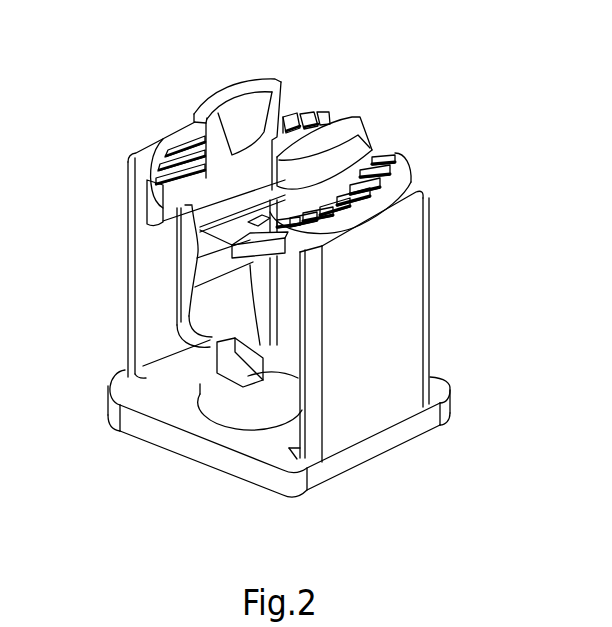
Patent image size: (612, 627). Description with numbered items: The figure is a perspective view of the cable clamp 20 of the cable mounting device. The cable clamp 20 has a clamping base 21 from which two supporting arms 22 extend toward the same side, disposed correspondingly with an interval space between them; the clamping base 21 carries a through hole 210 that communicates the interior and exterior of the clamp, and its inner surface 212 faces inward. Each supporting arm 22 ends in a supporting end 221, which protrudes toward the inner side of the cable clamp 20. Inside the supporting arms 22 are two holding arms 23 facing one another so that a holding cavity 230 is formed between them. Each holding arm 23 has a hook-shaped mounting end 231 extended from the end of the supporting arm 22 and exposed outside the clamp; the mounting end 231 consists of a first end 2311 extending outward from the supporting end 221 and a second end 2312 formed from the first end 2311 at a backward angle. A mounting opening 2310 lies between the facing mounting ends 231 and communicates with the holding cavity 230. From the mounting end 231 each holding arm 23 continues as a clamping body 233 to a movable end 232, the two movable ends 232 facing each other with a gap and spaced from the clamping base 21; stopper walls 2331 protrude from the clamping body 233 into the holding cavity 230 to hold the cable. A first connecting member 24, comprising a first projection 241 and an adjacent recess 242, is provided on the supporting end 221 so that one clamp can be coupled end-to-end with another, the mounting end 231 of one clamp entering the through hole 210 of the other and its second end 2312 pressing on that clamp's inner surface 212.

The cable clamp 20 is at (466, 272).
The clamping base 21 is at (208, 432).
The through hole 210 is at (262, 408).
The inner surface 212 is at (237, 436).
The supporting arm 22 is at (398, 289).
The supporting end 221 is at (147, 157).
The holding arm 23 is at (180, 307).
The holding cavity 230 is at (207, 353).
The mounting end 231 is at (237, 84).
The mounting opening 2310 is at (320, 122).
The first end 2311 is at (217, 98).
The second end 2312 is at (353, 148).
The movable end 232 is at (208, 346).
The clamping body 233 is at (180, 278).
The stopper wall 2331 is at (180, 250).
The first connecting member 24 is at (393, 189).
The first projection 241 is at (362, 196).
The recess 242 is at (328, 199).